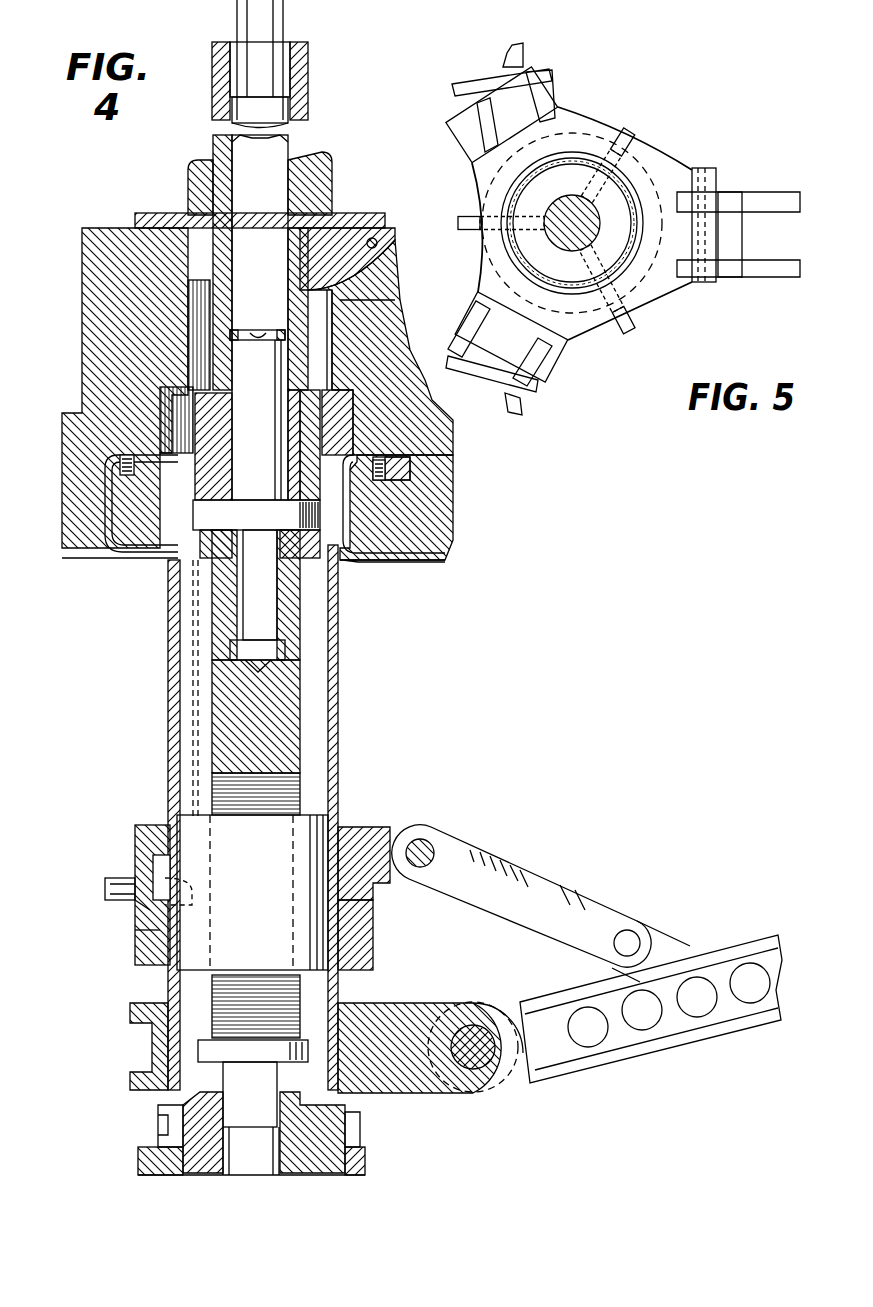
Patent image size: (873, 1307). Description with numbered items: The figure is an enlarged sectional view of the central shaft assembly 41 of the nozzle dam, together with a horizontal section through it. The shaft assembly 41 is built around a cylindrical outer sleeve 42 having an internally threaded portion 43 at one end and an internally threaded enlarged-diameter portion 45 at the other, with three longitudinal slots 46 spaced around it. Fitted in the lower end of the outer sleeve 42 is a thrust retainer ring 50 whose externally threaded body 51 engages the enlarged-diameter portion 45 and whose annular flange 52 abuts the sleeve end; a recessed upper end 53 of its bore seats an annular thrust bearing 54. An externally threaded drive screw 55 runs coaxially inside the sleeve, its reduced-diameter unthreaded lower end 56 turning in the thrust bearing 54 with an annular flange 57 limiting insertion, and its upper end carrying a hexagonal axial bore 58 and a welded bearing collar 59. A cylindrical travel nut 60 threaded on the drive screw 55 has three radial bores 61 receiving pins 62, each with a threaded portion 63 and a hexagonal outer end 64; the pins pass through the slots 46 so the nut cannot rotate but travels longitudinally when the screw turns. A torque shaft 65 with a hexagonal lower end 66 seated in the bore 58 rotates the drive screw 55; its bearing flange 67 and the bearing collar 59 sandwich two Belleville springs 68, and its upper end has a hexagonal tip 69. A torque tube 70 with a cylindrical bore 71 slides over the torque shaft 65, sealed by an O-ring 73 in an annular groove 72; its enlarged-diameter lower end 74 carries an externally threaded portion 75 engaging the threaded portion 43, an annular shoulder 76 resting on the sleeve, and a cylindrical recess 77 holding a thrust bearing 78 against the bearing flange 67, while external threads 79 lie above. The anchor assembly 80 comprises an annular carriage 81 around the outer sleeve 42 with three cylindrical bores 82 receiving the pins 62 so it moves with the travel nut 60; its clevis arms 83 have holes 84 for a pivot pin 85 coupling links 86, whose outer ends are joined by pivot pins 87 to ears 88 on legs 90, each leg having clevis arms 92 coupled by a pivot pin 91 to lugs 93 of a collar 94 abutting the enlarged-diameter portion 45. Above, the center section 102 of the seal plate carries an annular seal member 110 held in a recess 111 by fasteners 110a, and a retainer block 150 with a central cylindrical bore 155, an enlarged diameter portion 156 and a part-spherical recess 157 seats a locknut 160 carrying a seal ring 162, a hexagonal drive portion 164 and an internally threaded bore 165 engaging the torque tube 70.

In FIG. 4, the shaft assembly 41 is at (524, 664).
In FIG. 4, the outer sleeve 42 is at (338, 690).
In FIG. 5, the outer sleeve 42 is at (580, 158).
In FIG. 4, the internally threaded portion 43 is at (334, 560).
In FIG. 4, the enlarged-diameter portion 45 is at (158, 1128).
In FIG. 4, the elongated slots 46 is at (172, 630).
In FIG. 4, the thrust retainer ring 50 is at (195, 1110).
In FIG. 4, the externally threaded body 51 is at (360, 1135).
In FIG. 4, the annular flange 52 is at (138, 1160).
In FIG. 4, the recessed upper end 53 is at (305, 1100).
In FIG. 4, the thrust bearing 54 is at (260, 1155).
In FIG. 4, the drive screw 55 is at (290, 750).
In FIG. 5, the drive screw 55 is at (572, 215).
In FIG. 4, the reduced-diameter unthreaded lower end 56 is at (223, 1080).
In FIG. 4, the annular flange 57 is at (300, 1040).
In FIG. 4, the axial bore 58 is at (215, 598).
In FIG. 4, the bearing collar 59 is at (200, 555).
In FIG. 4, the travel nut 60 is at (185, 820).
In FIG. 5, the travel nut 60 is at (615, 200).
In FIG. 4, the radial bores 61 is at (205, 895).
In FIG. 4, the pins 62 is at (135, 935).
In FIG. 4, the externally threaded portion 63 is at (135, 905).
In FIG. 4, the hexagonal outer end 64 is at (105, 889).
In FIG. 5, the hexagonal outer end 64 is at (628, 145).
In FIG. 4, the torque shaft 65 is at (285, 150).
In FIG. 4, the hexagonal lower end 66 is at (277, 630).
In FIG. 4, the bearing flange 67 is at (262, 512).
In FIG. 4, the Belleville springs 68 is at (215, 520).
In FIG. 4, the hexagonal reduced-diameter tip 69 is at (283, 22).
In FIG. 4, the torque tube 70 is at (308, 95).
In FIG. 4, the cylindrical bore 71 is at (300, 240).
In FIG. 4, the annular groove 72 is at (255, 330).
In FIG. 4, the O-ring 73 is at (232, 342).
In FIG. 4, the enlarged-diameter lower end 74 is at (330, 378).
In FIG. 4, the externally threaded cylindrical portion 75 is at (300, 575).
In FIG. 4, the annular shoulder 76 is at (350, 495).
In FIG. 4, the cylindrical recess 77 is at (300, 420).
In FIG. 4, the thrust bearing 78 is at (310, 460).
In FIG. 4, the external threads 79 is at (212, 80).
In FIG. 4, the anchor assembly 80 is at (720, 866).
In FIG. 4, the carriage 81 is at (365, 940).
In FIG. 5, the carriage 81 is at (590, 345).
In FIG. 4, the cylindrical bores 82 is at (150, 860).
In FIG. 4, the clevis arms 83 is at (375, 835).
In FIG. 5, the clevis arms 83 is at (560, 95).
In FIG. 5, the holes 84 is at (712, 175).
In FIG. 4, the pivot pin 85 is at (425, 845).
In FIG. 4, the links 86 is at (560, 885).
In FIG. 5, the links 86 is at (505, 42).
In FIG. 4, the pivot pins 87 is at (630, 930).
In FIG. 4, the ears 88 is at (672, 945).
In FIG. 4, the legs 90 is at (700, 1035).
In FIG. 4, the pivot pin 91 is at (478, 1070).
In FIG. 4, the clevis arms 92 is at (500, 1000).
In FIG. 4, the lugs 93 is at (440, 1010).
In FIG. 4, the collar 94 is at (140, 1003).
In FIG. 4, the center section 102 is at (445, 525).
In FIG. 4, the annular seal member 110 is at (400, 565).
In FIG. 4, the fasteners 110a is at (410, 475).
In FIG. 4, the recess 111 is at (385, 462).
In FIG. 4, the retainer block 150 is at (410, 405).
In FIG. 4, the central cylindrical bore 155 is at (395, 300).
In FIG. 4, the enlarged diameter portion 156 is at (353, 395).
In FIG. 4, the part-spherical recess 157 is at (377, 246).
In FIG. 4, the locknut 160 is at (160, 230).
In FIG. 4, the seal ring 162 is at (120, 240).
In FIG. 4, the hexagonal drive portion 164 is at (332, 192).
In FIG. 4, the internally threaded bore 165 is at (213, 155).